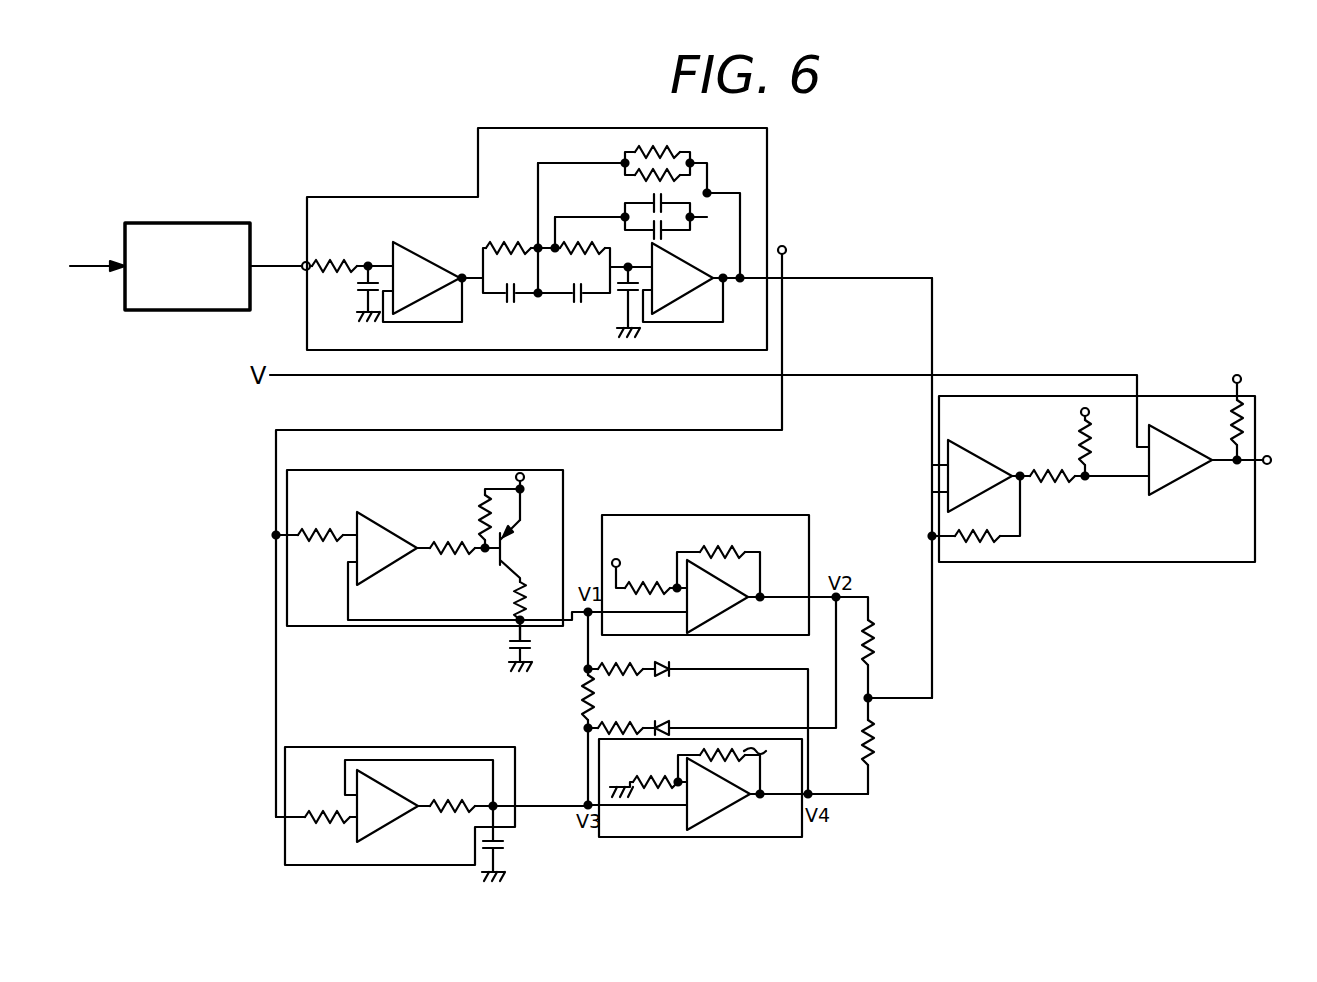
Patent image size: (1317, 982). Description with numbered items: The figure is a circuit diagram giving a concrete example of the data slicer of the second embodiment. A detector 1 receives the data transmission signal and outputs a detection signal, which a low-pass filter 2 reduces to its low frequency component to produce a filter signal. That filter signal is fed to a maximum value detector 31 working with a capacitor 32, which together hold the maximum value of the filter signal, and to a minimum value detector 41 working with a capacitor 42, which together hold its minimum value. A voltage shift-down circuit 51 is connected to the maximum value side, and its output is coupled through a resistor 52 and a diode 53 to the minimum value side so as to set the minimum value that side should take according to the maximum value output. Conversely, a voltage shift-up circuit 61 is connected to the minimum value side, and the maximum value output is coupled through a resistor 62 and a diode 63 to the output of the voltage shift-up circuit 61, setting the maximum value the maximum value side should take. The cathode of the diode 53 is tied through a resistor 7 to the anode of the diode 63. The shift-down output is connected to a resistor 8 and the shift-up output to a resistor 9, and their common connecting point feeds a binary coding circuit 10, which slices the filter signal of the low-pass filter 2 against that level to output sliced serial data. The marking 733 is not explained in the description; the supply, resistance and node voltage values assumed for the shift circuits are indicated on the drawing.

The detector 1 is at (205, 222).
The low-pass filter 2 is at (768, 135).
The binary coding circuit 10 is at (1200, 396).
The maximum value detector 31 is at (468, 470).
The capacitor 32 is at (510, 642).
The signal level indicator 733 is at (588, 510).
The minimum value detector 41 is at (432, 747).
The capacitor 42 is at (507, 846).
The voltage shift-down circuit 51 is at (750, 515).
The resistor 52 is at (624, 726).
The diode 53 is at (664, 722).
The voltage shift-up circuit 61 is at (765, 838).
The resistor 62 is at (636, 667).
The diode 63 is at (668, 660).
The resistor 7 is at (580, 695).
The resistor 8 is at (874, 647).
The resistor 9 is at (874, 747).